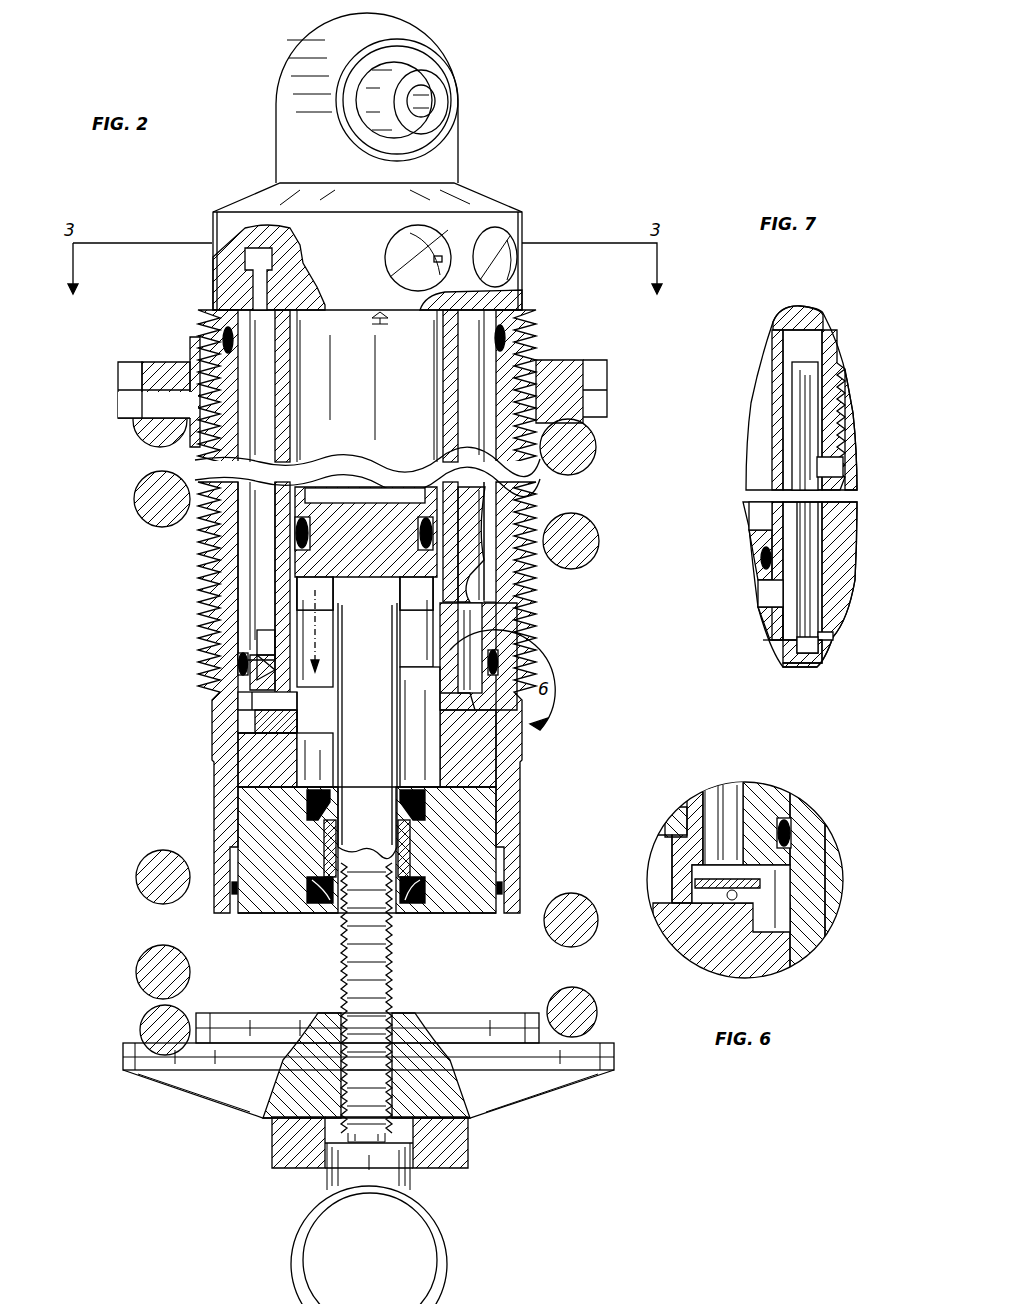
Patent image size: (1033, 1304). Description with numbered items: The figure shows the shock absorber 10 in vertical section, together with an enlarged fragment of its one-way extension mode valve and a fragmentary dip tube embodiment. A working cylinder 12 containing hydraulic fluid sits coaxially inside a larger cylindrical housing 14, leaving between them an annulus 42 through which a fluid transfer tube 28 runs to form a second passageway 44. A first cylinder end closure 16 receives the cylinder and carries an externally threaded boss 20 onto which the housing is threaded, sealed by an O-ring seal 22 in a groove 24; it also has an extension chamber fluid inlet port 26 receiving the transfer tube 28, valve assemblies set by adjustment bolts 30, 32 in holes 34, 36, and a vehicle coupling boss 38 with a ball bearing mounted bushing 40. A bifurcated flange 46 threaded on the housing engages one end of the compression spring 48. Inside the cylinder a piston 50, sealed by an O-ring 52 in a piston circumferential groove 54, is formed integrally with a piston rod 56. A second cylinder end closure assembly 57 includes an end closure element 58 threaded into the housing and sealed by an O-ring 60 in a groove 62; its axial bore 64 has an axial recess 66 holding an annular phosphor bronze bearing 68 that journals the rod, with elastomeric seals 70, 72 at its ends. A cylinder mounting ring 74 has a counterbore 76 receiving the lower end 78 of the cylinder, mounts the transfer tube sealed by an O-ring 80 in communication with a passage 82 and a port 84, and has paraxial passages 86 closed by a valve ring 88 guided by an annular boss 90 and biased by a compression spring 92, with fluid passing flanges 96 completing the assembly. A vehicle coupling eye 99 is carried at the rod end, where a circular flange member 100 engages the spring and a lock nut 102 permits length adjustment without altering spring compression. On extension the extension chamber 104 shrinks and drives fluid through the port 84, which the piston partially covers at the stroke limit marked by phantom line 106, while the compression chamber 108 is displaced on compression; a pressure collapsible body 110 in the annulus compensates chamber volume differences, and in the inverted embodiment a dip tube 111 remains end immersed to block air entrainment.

In FIG. 2, the shock absorber 10 is at (120, 560).
In FIG. 2, the working cylinder 12 is at (290, 578).
In FIG. 7, the working cylinder 12 is at (770, 437).
In FIG. 2, the cylindrical housing 14 is at (225, 665).
In FIG. 7, the cylindrical housing 14 is at (848, 402).
In FIG. 6, the cylindrical housing 14 is at (815, 930).
In FIG. 2, the first cylinder end closure 16 is at (215, 222).
In FIG. 7, the first cylinder end closure 16 is at (810, 318).
In FIG. 2, the externally threaded boss 20 is at (525, 300).
In FIG. 7, the externally threaded boss 20 is at (830, 423).
In FIG. 2, the O-ring seal 22 is at (222, 340).
In FIG. 2, the groove 24 is at (505, 332).
In FIG. 2, the extension chamber fluid inlet port 26 is at (292, 247).
In FIG. 2, the fluid transfer tube 28 is at (215, 447).
In FIG. 2, the adjustment bolt 30 is at (415, 240).
In FIG. 2, the adjustment bolt 32 is at (496, 245).
In FIG. 2, the hole 34 is at (455, 252).
In FIG. 2, the hole 36 is at (512, 276).
In FIG. 2, the vehicle coupling boss 38 is at (327, 29).
In FIG. 2, the ball bearing mounted bushing 40 is at (398, 82).
In FIG. 2, the annulus 42 is at (487, 594).
In FIG. 7, the annulus 42 is at (812, 340).
In FIG. 6, the annulus 42 is at (722, 790).
In FIG. 2, the second passageway 44 is at (262, 258).
In FIG. 2, the bifurcated flange 46 is at (565, 366).
In FIG. 2, the compression spring 48 is at (578, 448).
In FIG. 2, the piston 50 is at (384, 548).
In FIG. 7, the piston 50 is at (760, 558).
In FIG. 2, the O-ring 52 is at (335, 490).
In FIG. 7, the O-ring 52 is at (760, 583).
In FIG. 2, the piston circumferential groove 54 is at (432, 533).
In FIG. 2, the piston rod 56 is at (390, 810).
In FIG. 2, the second cylinder end closure assembly 57 is at (478, 918).
In FIG. 2, the end closure element 58 is at (262, 908).
In FIG. 2, the O-ring 60 is at (228, 893).
In FIG. 2, the groove 62 is at (446, 908).
In FIG. 2, the axial bore 64 is at (428, 806).
In FIG. 2, the axial recess 66 is at (385, 848).
In FIG. 2, the annular phosphor bronze bearing 68 is at (432, 858).
In FIG. 2, the elastomeric seal 70 is at (302, 800).
In FIG. 2, the elastomeric seal 72 is at (297, 908).
In FIG. 2, the cylinder mounting ring 74 is at (505, 625).
In FIG. 7, the cylinder mounting ring 74 is at (830, 650).
In FIG. 2, the counterbore 76 is at (505, 660).
In FIG. 6, the counterbore 76 is at (678, 815).
In FIG. 2, the lower end of cylinder 78 is at (432, 634).
In FIG. 7, the lower end of cylinder 78 is at (778, 595).
In FIG. 6, the lower end of cylinder 78 is at (665, 822).
In FIG. 2, the O-ring 80 is at (247, 630).
In FIG. 2, the passage 82 is at (236, 690).
In FIG. 2, the port 84 is at (316, 644).
In FIG. 2, the paraxial passages 86 is at (545, 706).
In FIG. 2, the valve ring 88 is at (243, 718).
In FIG. 6, the valve ring 88 is at (762, 882).
In FIG. 2, the annular boss 90 is at (287, 738).
In FIG. 2, the compression spring 92 is at (302, 716).
In FIG. 6, the compression spring 92 is at (728, 905).
In FIG. 2, the fluid passing flanges 96 is at (260, 762).
In FIG. 2, the vehicle coupling eye 99 is at (445, 1245).
In FIG. 2, the circular flange member 100 is at (540, 1098).
In FIG. 2, the lock nut 102 is at (462, 1152).
In FIG. 2, the extension chamber 104 is at (412, 737).
In FIG. 7, the extension chamber 104 is at (768, 650).
In FIG. 6, the extension chamber 104 is at (655, 862).
In FIG. 2, the phantom line 106 is at (400, 676).
In FIG. 2, the compression chamber 108 is at (374, 380).
In FIG. 7, the compression chamber 108 is at (765, 479).
In FIG. 2, the pressure collapsible body 110 is at (470, 565).
In FIG. 7, the dip tube 111 is at (765, 512).